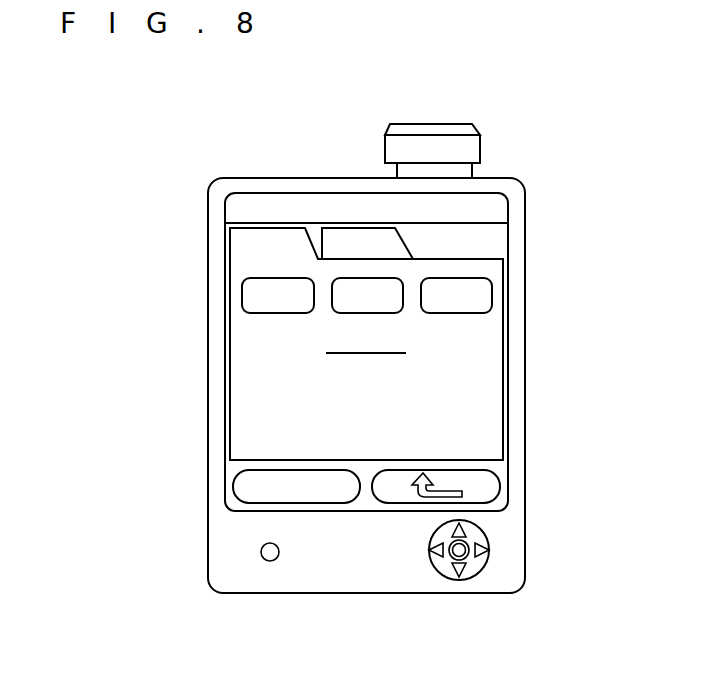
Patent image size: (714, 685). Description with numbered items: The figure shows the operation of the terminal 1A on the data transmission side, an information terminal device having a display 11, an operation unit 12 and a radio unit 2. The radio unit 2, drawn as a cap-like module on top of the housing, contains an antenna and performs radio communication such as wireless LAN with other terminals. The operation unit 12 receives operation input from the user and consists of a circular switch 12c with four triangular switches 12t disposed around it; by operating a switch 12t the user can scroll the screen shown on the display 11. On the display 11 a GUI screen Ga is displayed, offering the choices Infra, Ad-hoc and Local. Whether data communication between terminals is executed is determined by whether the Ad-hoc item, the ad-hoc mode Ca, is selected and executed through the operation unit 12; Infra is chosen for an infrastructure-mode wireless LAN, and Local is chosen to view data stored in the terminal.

The terminal 1A is at (184, 109).
The radio unit 2 is at (503, 153).
The display 11 is at (510, 212).
The operation unit 12 is at (494, 585).
The triangular switches 12t is at (487, 550).
The circular switch 12c is at (452, 558).
The GUI screen Ga is at (246, 380).
The Ad-hoc Ca is at (389, 361).